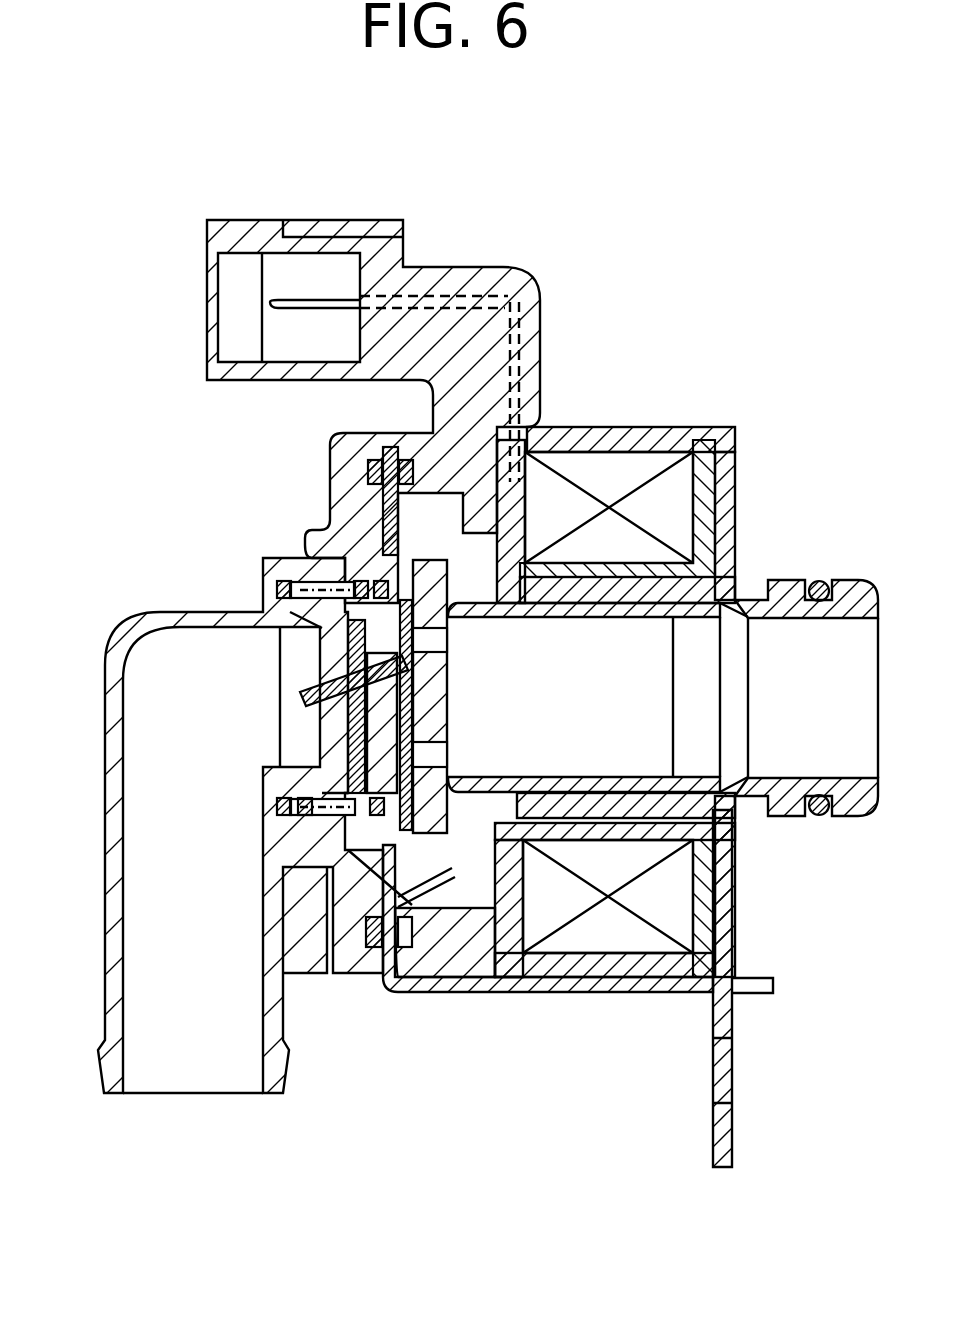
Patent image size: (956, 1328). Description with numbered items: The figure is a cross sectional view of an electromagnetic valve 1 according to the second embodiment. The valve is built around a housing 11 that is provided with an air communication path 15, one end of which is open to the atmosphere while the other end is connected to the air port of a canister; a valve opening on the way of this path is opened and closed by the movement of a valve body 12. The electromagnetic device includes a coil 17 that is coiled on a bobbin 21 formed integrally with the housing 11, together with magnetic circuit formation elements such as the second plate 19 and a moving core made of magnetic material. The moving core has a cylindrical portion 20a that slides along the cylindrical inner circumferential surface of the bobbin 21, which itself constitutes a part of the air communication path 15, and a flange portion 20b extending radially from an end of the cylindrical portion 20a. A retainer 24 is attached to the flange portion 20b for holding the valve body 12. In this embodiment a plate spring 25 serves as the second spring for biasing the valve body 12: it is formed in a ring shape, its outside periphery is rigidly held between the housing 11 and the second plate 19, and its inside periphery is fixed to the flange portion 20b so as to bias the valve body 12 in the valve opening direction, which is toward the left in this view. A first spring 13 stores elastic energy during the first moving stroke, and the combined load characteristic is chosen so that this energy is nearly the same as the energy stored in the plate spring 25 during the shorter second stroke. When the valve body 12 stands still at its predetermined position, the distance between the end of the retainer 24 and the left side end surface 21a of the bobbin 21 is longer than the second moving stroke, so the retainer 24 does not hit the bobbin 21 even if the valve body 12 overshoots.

The electromagnetic valve 1 is at (606, 219).
The housing 11 is at (255, 809).
The valve body 12 is at (305, 690).
The first spring 13 is at (321, 583).
The air communication path 15 is at (231, 848).
The coil 17 is at (622, 470).
The second plate 19 is at (528, 985).
The cylindrical portion 20a is at (584, 842).
The flange portion 20b is at (380, 890).
The bobbin 21 is at (700, 468).
The left side end surface 21a is at (478, 498).
The retainer 24 is at (428, 732).
The plate spring 25 is at (432, 892).